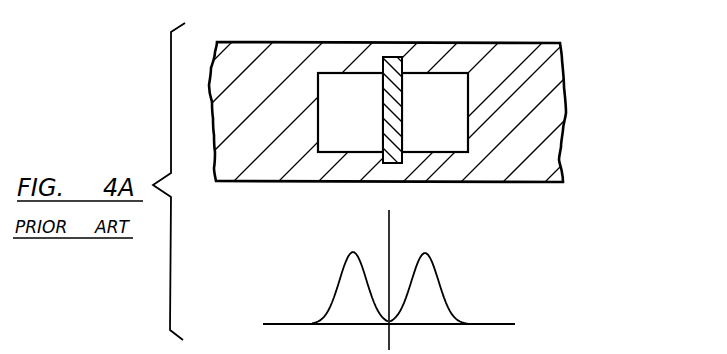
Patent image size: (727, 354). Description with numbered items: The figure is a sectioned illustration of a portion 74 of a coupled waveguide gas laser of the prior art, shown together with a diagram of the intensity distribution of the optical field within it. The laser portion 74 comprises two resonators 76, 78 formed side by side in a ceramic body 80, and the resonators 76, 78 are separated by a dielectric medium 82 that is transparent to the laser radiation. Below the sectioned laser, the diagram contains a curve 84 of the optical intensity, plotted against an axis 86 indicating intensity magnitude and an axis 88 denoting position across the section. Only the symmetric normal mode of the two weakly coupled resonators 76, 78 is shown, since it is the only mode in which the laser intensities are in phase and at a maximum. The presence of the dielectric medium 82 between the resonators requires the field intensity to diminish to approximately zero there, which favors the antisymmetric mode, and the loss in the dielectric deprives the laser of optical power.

The portion of a coupled waveguide gas laser 74 is at (587, 62).
The resonator 76 is at (362, 121).
The resonator 78 is at (446, 121).
The ceramic body 80 is at (560, 125).
The dielectric medium 82 is at (397, 58).
The curve of the optical intensity 84 is at (437, 272).
The axis indicating intensity magnitude 86 is at (389, 225).
The axis denoting position 88 is at (500, 325).